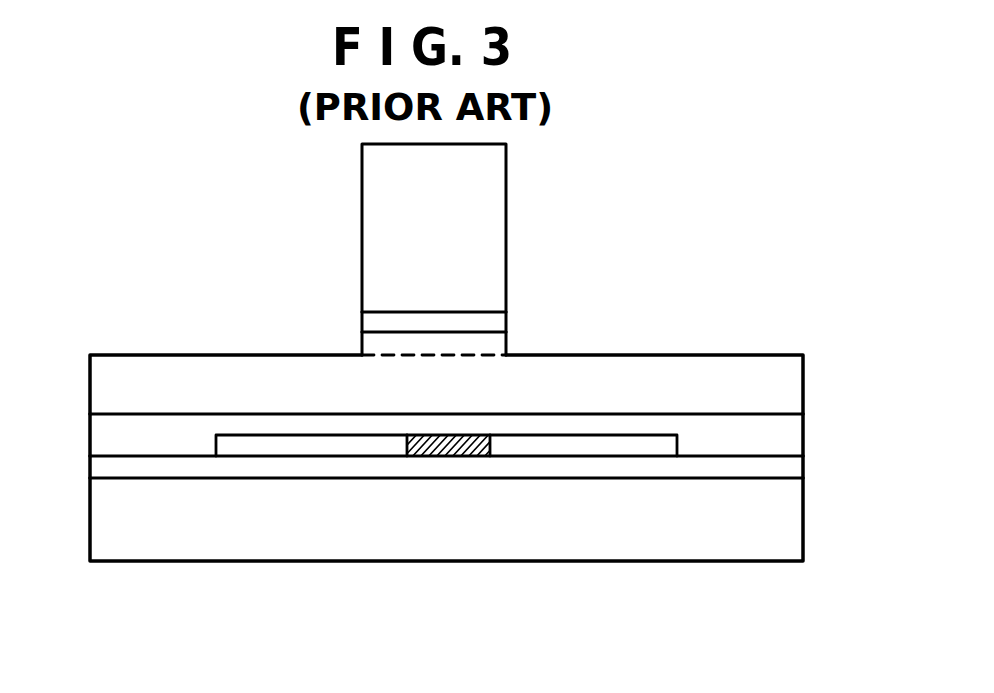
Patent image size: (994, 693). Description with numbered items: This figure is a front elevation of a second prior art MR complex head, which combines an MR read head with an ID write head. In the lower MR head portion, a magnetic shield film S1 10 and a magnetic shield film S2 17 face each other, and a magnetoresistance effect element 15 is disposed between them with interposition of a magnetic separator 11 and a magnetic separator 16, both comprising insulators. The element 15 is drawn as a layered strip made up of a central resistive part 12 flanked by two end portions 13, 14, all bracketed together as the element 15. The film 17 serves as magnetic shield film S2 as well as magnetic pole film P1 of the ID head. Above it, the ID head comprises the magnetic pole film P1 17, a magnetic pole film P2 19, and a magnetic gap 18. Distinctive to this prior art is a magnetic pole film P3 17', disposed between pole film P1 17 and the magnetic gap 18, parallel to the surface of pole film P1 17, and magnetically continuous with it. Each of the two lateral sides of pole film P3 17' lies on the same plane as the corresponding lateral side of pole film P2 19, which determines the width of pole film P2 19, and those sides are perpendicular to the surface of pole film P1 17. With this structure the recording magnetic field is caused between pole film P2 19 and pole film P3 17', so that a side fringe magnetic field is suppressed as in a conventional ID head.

The magnetic shield film S1 10 is at (745, 545).
The magnetic separator 11 is at (785, 463).
The thin film resistor 12 is at (453, 447).
The electrode 13 is at (592, 443).
The electrode 14 is at (302, 447).
The magnetoresistance effect element 15 is at (285, 602).
The magnetic separator 16 is at (778, 433).
The magnetic shield film S2 / magnetic pole film P1 17 is at (446, 361).
The magnetic pole film P3 17' is at (391, 327).
The magnetic gap 18 is at (490, 321).
The magnetic pole film P2 19 is at (478, 218).